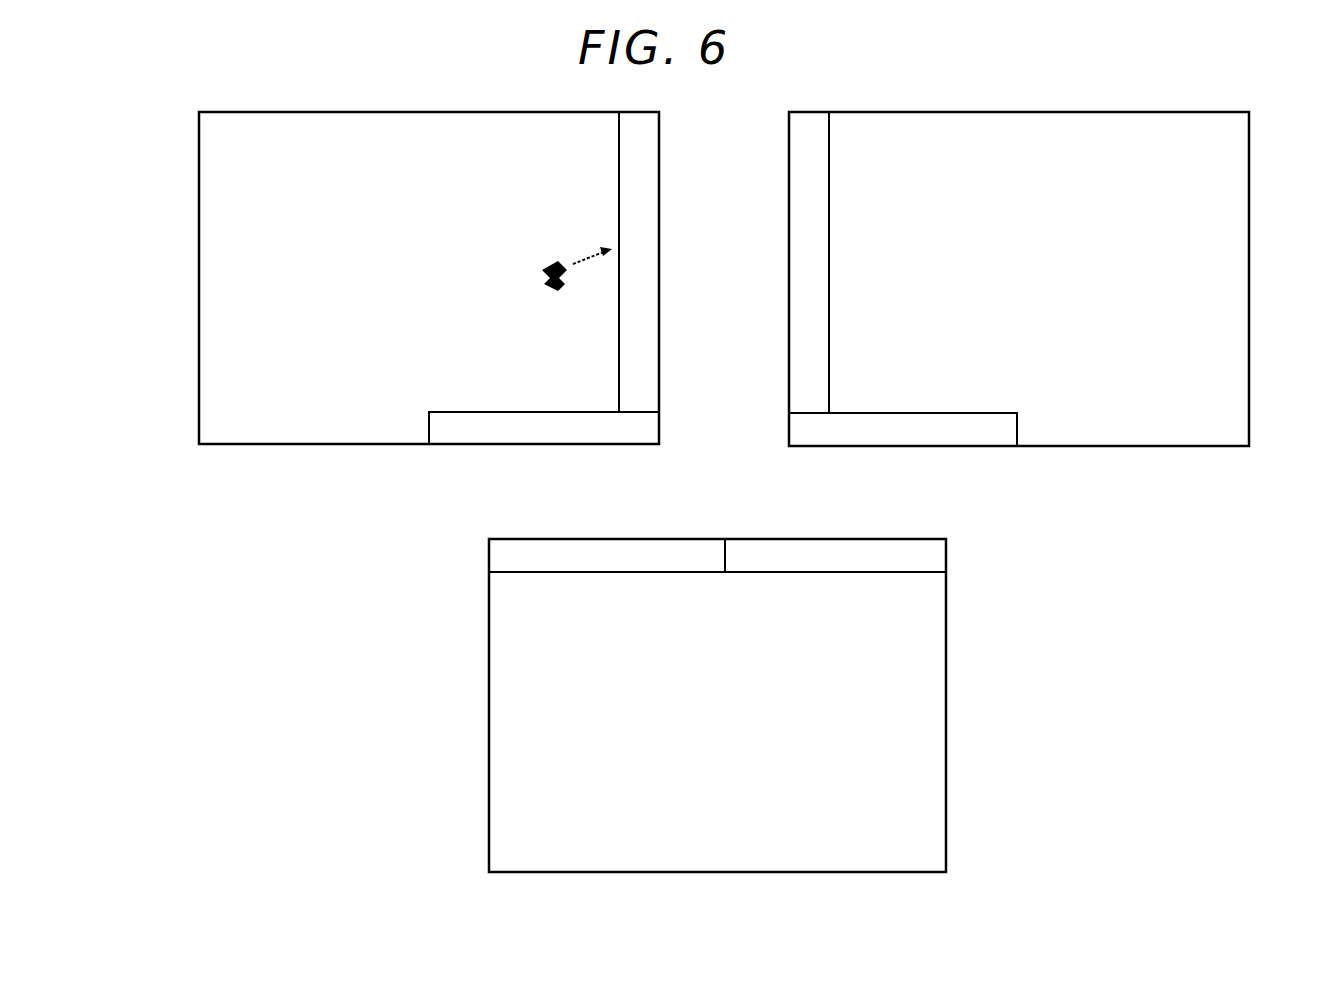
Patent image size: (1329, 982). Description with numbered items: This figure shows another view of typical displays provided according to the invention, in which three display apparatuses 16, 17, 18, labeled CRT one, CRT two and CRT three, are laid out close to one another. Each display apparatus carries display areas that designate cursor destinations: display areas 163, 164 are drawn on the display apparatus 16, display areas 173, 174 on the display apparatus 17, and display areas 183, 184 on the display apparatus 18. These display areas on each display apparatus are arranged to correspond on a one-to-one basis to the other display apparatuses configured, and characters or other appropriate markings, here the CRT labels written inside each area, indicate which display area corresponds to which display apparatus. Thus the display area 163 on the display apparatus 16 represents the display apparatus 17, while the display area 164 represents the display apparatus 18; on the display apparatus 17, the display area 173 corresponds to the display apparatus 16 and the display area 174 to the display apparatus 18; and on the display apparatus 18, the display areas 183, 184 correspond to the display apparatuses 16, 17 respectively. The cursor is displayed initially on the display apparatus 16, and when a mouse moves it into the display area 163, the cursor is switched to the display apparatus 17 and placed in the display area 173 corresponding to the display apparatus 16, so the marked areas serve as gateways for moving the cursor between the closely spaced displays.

The display apparatus 16 is at (660, 128).
The display apparatus 17 is at (1250, 135).
The display apparatus 18 is at (947, 558).
The display area 163 is at (660, 272).
The display area 164 is at (500, 446).
The display area 173 is at (788, 320).
The display area 174 is at (944, 447).
The display area 183 is at (607, 538).
The display area 184 is at (828, 538).